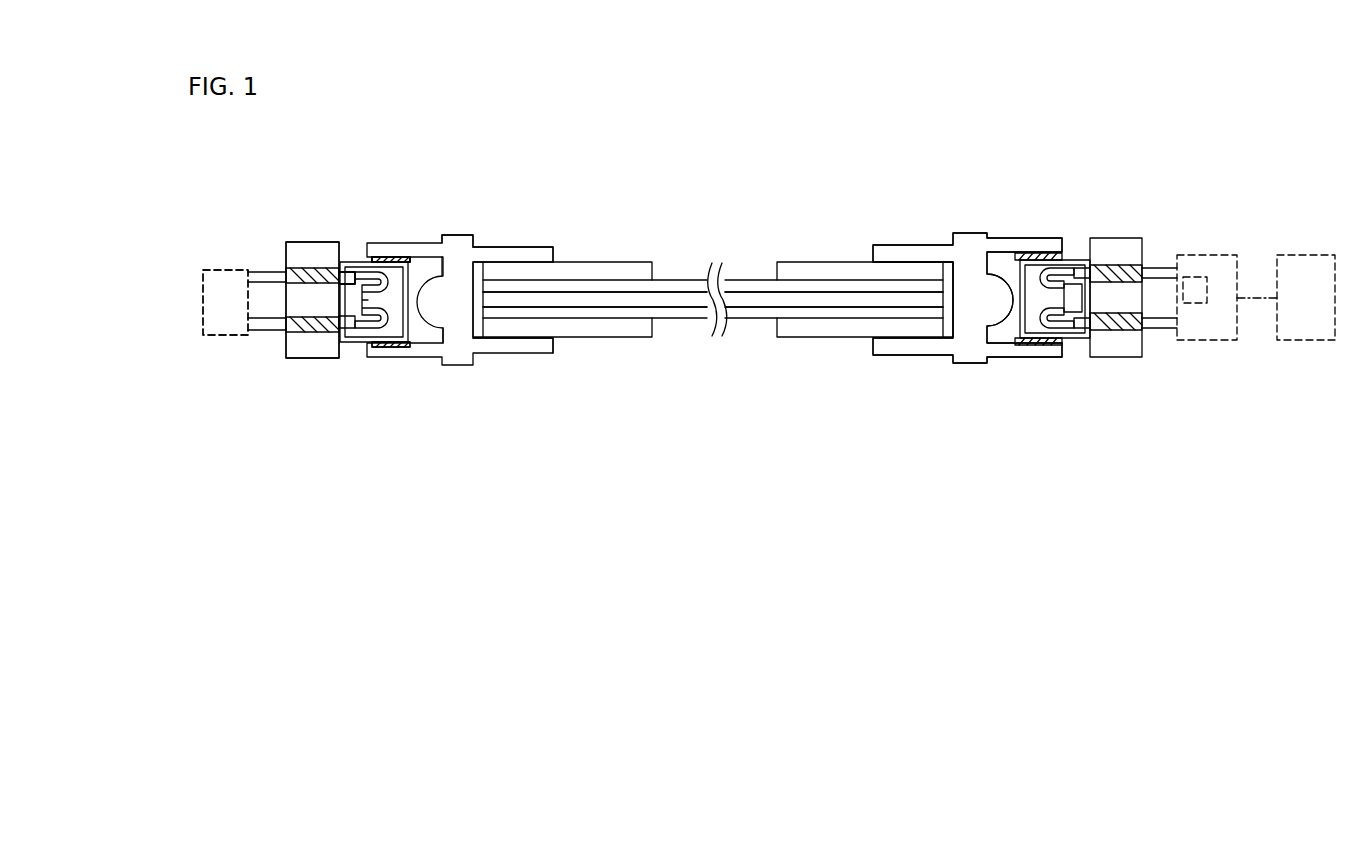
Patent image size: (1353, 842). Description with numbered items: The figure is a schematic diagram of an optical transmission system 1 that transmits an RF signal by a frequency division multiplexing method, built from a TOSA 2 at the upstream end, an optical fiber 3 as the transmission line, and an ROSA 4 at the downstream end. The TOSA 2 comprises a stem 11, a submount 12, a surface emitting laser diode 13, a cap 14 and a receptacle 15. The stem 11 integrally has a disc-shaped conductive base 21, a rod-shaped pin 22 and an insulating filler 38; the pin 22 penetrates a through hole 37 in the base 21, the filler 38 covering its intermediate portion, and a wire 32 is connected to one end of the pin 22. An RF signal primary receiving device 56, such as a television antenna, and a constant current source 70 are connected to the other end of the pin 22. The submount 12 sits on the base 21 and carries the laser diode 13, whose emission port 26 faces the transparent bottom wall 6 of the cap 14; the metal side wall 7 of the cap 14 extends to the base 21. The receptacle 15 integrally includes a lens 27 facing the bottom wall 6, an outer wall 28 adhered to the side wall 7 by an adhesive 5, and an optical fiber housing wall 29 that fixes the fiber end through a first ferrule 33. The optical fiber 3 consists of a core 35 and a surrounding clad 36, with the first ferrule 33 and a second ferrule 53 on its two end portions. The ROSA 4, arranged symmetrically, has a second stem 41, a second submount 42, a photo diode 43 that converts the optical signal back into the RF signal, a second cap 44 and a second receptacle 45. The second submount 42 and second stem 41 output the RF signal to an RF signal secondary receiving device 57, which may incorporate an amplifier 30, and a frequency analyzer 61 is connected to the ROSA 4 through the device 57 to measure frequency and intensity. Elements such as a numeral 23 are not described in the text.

The optical transmission system 1 is at (763, 616).
The TOSA 2 is at (377, 343).
The optical fiber 3 is at (690, 320).
The ROSA 4 is at (1032, 358).
The adhesive 5 is at (388, 257).
The bottom wall 6 is at (414, 257).
The side wall 7 is at (391, 257).
The stem 11 is at (307, 262).
The submount 12 is at (338, 272).
The surface emitting laser diode 13 is at (350, 262).
The cap 14 is at (457, 143).
The receptacle 15 is at (455, 242).
The base 21 is at (305, 360).
The pin 22 is at (270, 270).
The terminal pin 23 is at (352, 272).
The emission port 26 is at (395, 348).
The lens 27 is at (420, 346).
The outer wall 28 is at (447, 240).
The optical fiber housing wall 29 is at (518, 247).
The amplifier 30 is at (1193, 277).
The wire 32 is at (360, 342).
The first ferrule 33 is at (606, 262).
The core 35 is at (750, 292).
The clad 36 is at (737, 280).
The through hole 37 is at (320, 334).
The insulating filler 38 is at (297, 266).
The second stem 41 is at (1120, 238).
The second submount 42 is at (1083, 260).
The photo diode 43 is at (1072, 266).
The second cap 44 is at (1010, 253).
The second receptacle 45 is at (972, 233).
The second ferrule 53 is at (826, 262).
The RF signal primary receiving device 56 is at (223, 337).
The RF signal secondary receiving device 57 is at (1203, 342).
The frequency analyzer 61 is at (1302, 342).
The constant current source 70 is at (225, 302).